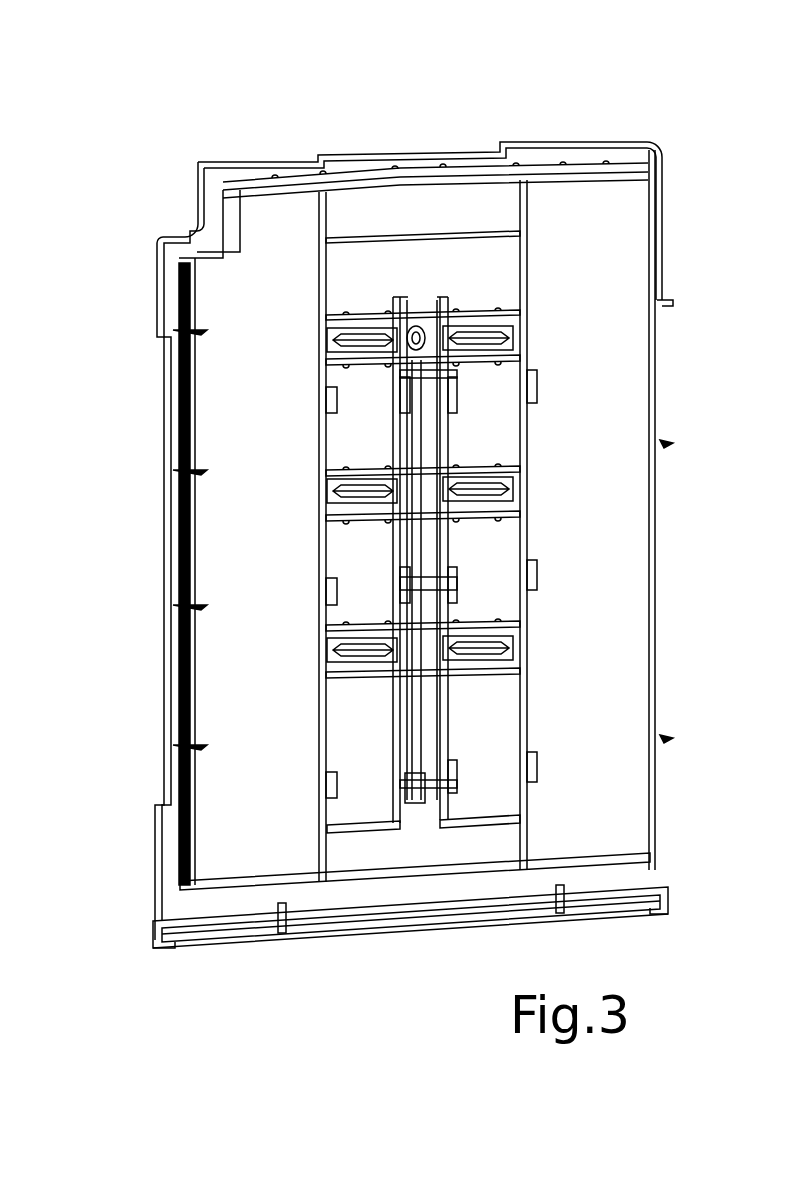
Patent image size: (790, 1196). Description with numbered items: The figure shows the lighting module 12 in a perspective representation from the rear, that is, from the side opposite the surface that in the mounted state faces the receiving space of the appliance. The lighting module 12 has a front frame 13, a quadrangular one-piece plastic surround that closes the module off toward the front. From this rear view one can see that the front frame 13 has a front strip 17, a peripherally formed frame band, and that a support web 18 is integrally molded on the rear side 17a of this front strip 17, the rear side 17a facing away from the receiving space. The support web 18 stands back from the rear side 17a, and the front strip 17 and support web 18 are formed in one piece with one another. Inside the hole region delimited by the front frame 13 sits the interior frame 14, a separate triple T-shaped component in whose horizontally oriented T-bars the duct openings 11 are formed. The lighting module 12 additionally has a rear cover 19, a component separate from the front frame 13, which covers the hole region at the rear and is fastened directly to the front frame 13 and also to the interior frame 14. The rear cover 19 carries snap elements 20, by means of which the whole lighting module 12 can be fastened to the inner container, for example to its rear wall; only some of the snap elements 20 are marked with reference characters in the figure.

The duct openings 11 is at (383, 325).
The lighting module 12 is at (228, 113).
The front frame 13 is at (328, 125).
The interior frame 14 is at (414, 325).
The front strip 17 is at (210, 190).
The rear side 17a is at (254, 177).
The support web 18 is at (190, 300).
The rear cover 19 is at (225, 655).
The snap elements 20 is at (320, 403).